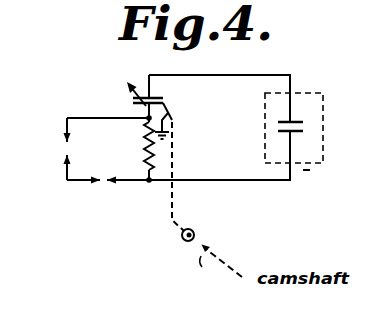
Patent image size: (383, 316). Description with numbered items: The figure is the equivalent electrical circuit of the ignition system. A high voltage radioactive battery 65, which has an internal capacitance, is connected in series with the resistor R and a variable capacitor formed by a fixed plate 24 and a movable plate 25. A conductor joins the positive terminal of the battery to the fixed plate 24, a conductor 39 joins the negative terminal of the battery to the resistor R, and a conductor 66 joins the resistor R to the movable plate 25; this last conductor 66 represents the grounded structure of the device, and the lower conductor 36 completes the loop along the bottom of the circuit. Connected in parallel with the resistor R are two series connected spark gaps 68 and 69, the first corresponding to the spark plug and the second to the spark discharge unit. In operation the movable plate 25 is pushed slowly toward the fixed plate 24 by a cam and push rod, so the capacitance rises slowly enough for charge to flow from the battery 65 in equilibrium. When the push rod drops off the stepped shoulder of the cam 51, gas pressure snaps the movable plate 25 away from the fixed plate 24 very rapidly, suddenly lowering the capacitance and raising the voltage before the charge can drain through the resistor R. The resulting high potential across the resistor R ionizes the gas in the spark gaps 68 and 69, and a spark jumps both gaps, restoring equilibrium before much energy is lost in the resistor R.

The fixed plate 24 is at (163, 99).
The movable plate 25 is at (147, 100).
The conductor 36 is at (290, 165).
The conductor 39 is at (260, 181).
The cam 51 is at (195, 231).
The radioactive battery 65 is at (314, 93).
The conductor 66 is at (148, 112).
The spark gap 68 is at (63, 149).
The spark gap 69 is at (103, 182).
The resistor R is at (142, 145).